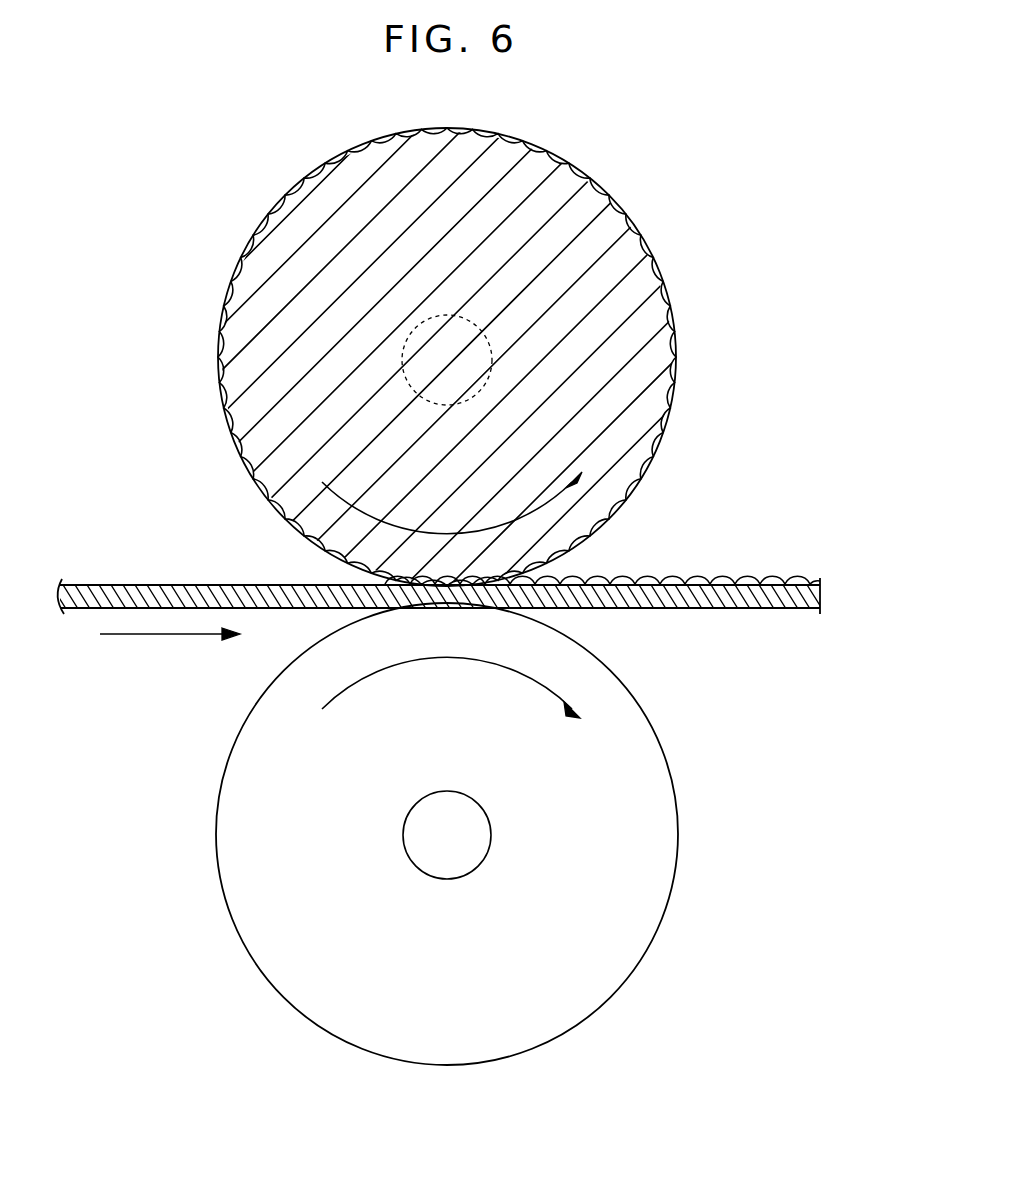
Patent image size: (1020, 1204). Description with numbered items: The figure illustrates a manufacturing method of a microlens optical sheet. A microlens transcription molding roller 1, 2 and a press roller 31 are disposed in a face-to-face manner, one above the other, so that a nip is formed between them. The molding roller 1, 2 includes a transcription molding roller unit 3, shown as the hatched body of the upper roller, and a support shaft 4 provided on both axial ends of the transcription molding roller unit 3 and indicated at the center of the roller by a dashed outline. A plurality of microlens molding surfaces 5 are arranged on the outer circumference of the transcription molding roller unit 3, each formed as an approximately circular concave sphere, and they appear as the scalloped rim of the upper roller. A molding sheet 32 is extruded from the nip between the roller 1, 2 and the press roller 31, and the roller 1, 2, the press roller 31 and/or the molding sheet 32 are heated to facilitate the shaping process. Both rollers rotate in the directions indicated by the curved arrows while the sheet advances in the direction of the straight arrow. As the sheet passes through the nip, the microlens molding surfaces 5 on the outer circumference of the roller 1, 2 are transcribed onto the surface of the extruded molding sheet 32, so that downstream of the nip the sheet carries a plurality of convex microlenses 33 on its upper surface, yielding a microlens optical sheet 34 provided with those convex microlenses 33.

The microlens transcription molding roller 1 is at (466, 357).
The microlens transcription molding roller 2 is at (605, 218).
The transcription molding roller unit 3 is at (264, 272).
The support shaft 4 is at (492, 358).
The microlens molding surfaces 5 is at (448, 127).
The press roller 31 is at (545, 1023).
The molding sheet 32 is at (745, 609).
The convex microlenses 33 is at (716, 580).
The microlens optical sheet 34 is at (810, 579).